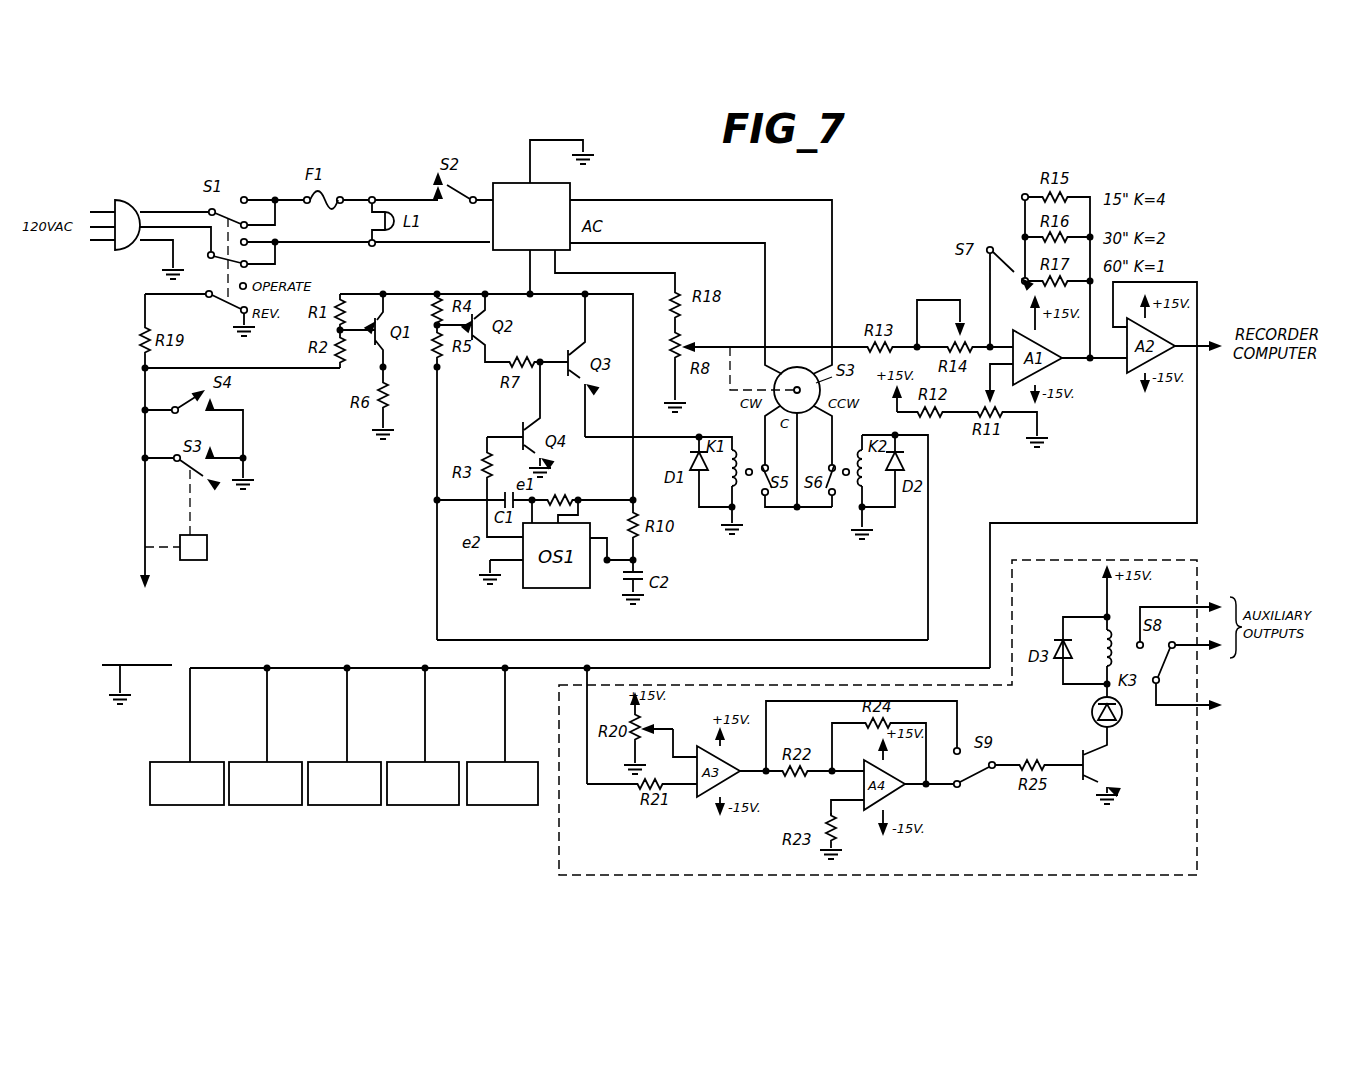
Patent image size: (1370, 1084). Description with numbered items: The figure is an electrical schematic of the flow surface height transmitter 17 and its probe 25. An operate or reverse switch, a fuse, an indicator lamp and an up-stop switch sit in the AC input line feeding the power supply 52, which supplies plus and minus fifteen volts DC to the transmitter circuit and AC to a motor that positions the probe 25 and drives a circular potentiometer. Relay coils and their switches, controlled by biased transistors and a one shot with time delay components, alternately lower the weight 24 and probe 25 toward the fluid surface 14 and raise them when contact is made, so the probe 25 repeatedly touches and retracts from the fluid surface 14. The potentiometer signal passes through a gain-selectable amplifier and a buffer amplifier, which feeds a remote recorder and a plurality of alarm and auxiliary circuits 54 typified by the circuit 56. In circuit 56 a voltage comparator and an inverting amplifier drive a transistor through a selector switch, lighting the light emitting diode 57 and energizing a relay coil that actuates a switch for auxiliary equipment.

The fluid surface 14 is at (165, 665).
The transmitter 17 is at (880, 250).
The weight 24 is at (207, 545).
The probe 25 is at (143, 586).
The power supply 52 is at (570, 195).
The alarm and auxiliary circuits 54 is at (188, 812).
The alarm and auxiliary circuit 56 is at (552, 858).
The light emitting diode 57 is at (1092, 714).